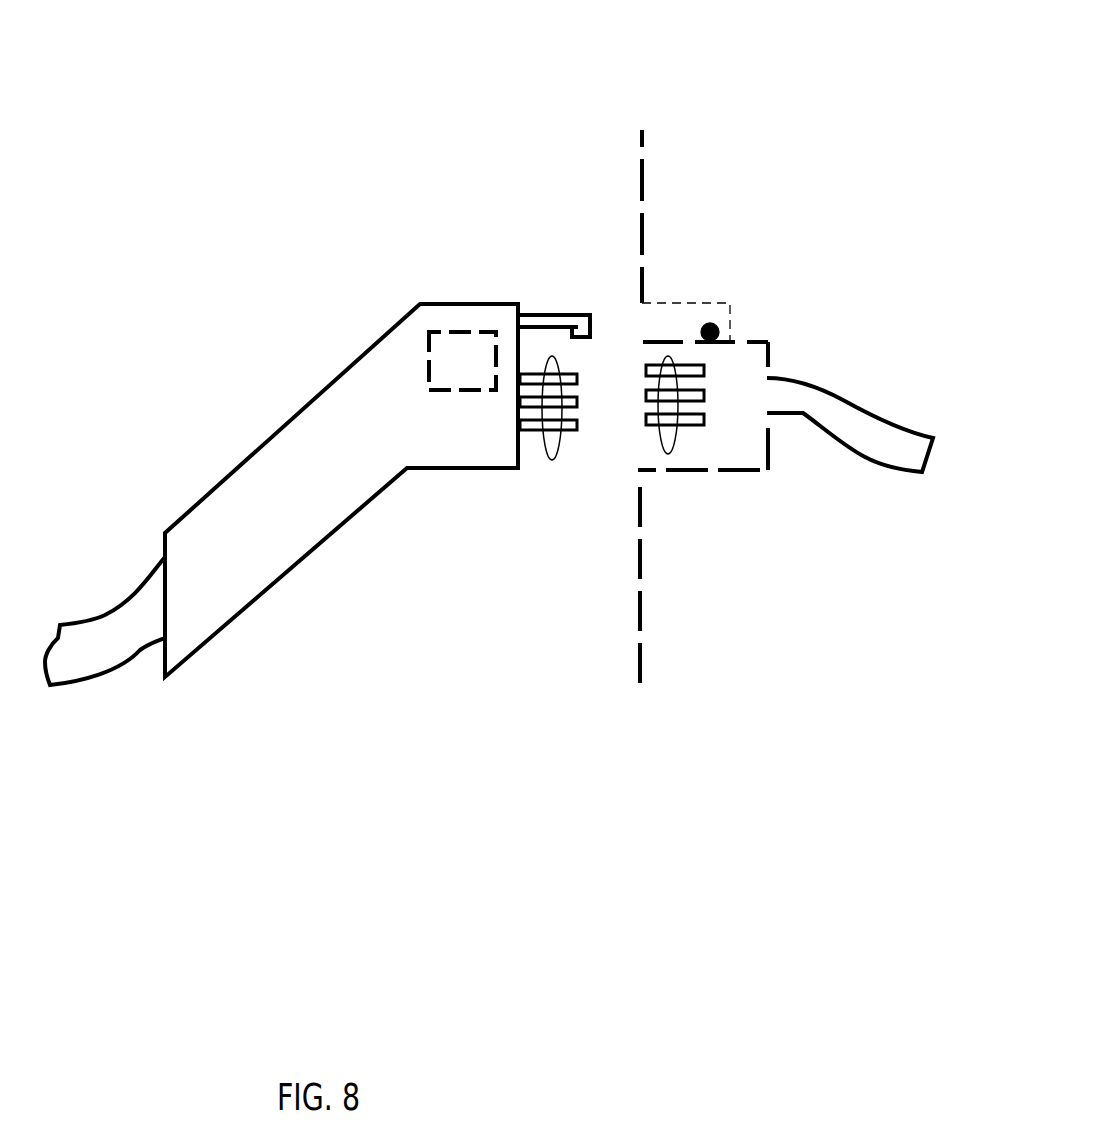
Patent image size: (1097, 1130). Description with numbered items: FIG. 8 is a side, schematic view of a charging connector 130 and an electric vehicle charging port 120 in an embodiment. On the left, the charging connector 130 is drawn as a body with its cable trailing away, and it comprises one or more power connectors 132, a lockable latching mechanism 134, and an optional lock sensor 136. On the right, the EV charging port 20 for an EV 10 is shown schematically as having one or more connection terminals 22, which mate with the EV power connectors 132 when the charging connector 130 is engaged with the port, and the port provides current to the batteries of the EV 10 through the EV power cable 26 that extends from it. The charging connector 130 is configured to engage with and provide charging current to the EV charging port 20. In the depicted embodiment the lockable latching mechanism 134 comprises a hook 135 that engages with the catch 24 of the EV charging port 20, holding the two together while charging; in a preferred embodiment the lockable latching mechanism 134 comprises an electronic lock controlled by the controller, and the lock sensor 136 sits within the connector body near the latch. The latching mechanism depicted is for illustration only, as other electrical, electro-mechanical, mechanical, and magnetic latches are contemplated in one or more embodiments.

The EV 10 is at (703, 75).
The EV charging port 20 is at (790, 500).
The connection terminals 22 is at (672, 447).
The catch 24 is at (717, 322).
The EV power cable 26 is at (848, 427).
The electric vehicle charging port 120 is at (150, 612).
The charging connector 130 is at (232, 322).
The power connectors 132 is at (556, 443).
The lockable latching mechanism 134 is at (517, 306).
The hook 135 is at (562, 315).
The lock sensor 136 is at (460, 360).